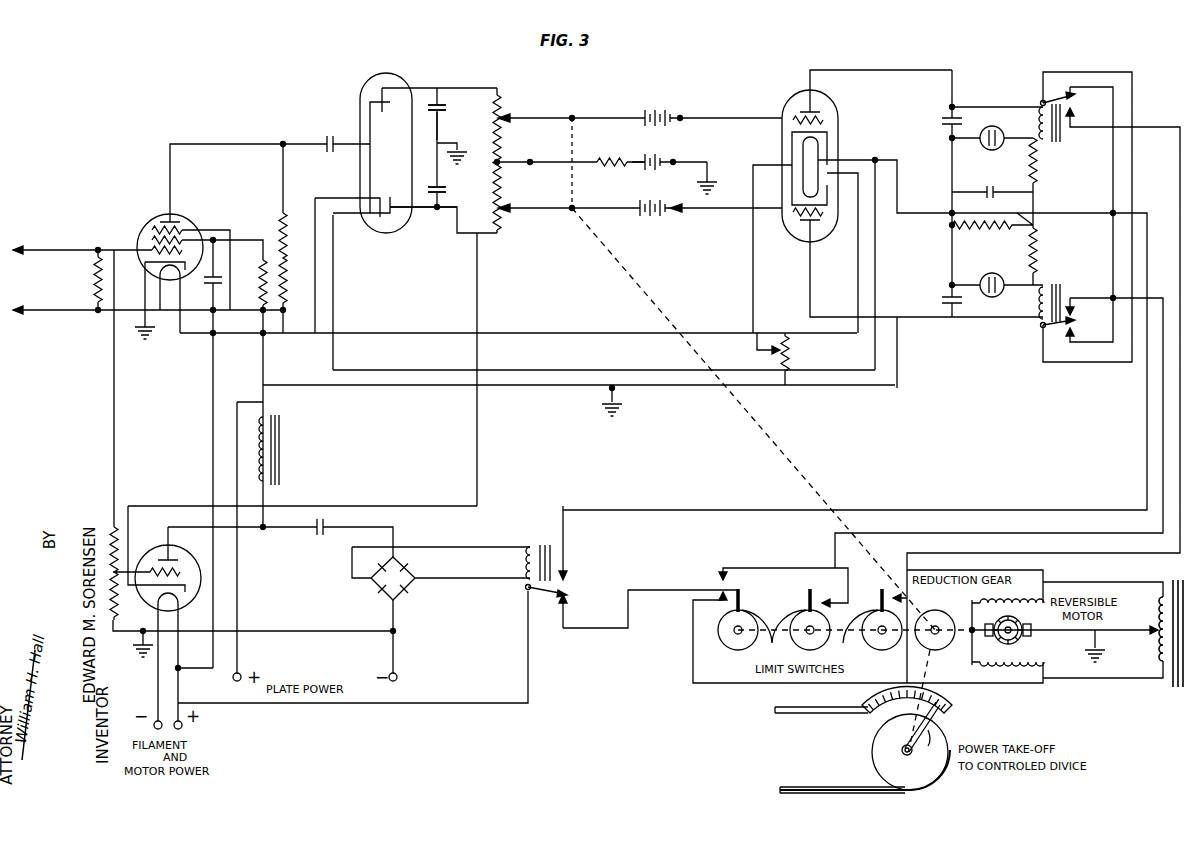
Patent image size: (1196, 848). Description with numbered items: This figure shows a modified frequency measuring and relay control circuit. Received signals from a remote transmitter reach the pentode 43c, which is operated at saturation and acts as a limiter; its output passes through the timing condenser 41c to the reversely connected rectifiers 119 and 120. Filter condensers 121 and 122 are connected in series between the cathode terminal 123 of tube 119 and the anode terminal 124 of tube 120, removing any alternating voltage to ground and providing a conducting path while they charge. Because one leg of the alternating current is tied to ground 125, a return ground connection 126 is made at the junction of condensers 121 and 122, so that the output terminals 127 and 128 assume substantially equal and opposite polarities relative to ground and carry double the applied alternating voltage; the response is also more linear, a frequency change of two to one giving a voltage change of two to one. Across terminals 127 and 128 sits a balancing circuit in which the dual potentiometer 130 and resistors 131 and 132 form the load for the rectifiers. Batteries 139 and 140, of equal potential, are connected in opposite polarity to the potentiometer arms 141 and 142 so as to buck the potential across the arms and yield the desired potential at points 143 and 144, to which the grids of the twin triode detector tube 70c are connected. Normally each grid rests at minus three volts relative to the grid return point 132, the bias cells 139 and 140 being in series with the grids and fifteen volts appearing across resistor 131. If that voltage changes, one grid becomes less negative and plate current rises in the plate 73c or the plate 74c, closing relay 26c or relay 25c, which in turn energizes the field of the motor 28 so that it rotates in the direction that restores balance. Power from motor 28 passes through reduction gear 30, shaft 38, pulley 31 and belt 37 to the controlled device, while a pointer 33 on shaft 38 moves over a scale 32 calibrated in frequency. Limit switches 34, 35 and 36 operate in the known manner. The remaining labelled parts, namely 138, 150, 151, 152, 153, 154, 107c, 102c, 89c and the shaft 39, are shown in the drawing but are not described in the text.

The timing condenser 41c is at (325, 140).
The pentode 43c is at (208, 214).
The rectifier tube 119 is at (376, 82).
The rectifier tube 120 is at (380, 226).
The condenser 121 is at (424, 126).
The condenser 122 is at (430, 190).
The cathode terminal 123 is at (437, 86).
The anode terminal 124 is at (437, 210).
The ground 125 is at (152, 332).
The return ground connection 126 is at (459, 145).
The output terminal 127 is at (500, 90).
The output terminal 128 is at (498, 234).
The dual potentiometer 130 is at (503, 205).
The resistor 131 is at (497, 150).
The resistor 132 is at (496, 180).
The ground 138 is at (723, 180).
The battery 139 is at (658, 108).
The battery 140 is at (658, 222).
The potentiometer arm 141 is at (512, 118).
The potentiometer arm 142 is at (540, 210).
The point 143 is at (682, 120).
The point 144 is at (682, 212).
The amplifier tube 150 is at (156, 548).
The ground 151 is at (130, 645).
The resistor 152 is at (614, 151).
The battery 153 is at (640, 167).
The potentiometer 154 is at (792, 351).
The plate 74c is at (822, 112).
The twin triode detector tube 70c is at (848, 142).
The plate 73c is at (816, 230).
The glow tube and condenser 107c is at (988, 190).
The resistor 102c is at (1008, 233).
The relay 25c is at (1052, 140).
The relay 26c is at (1052, 290).
The relay 89c is at (532, 547).
The shaft 39 is at (766, 434).
The limit switch 34 is at (741, 615).
The limit switch 35 is at (808, 616).
The limit switch 36 is at (880, 616).
The reduction gear 30 is at (934, 620).
The motor 28 is at (1024, 640).
The shaft 38 is at (924, 670).
The scale 32 is at (950, 716).
The pointer 33 is at (921, 733).
The pulley 31 is at (934, 780).
The belt 37 is at (790, 786).